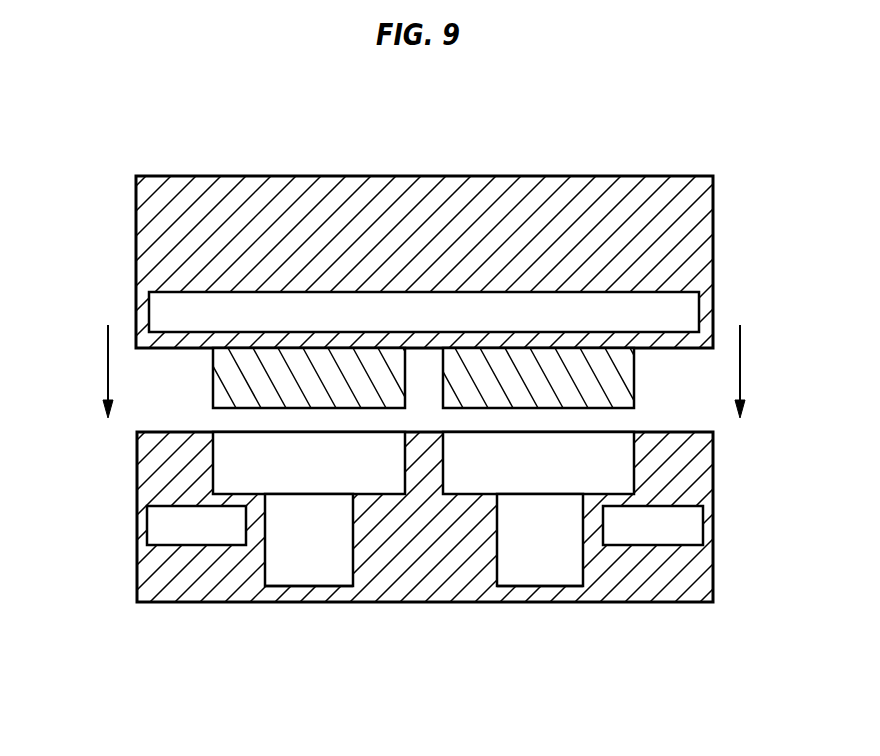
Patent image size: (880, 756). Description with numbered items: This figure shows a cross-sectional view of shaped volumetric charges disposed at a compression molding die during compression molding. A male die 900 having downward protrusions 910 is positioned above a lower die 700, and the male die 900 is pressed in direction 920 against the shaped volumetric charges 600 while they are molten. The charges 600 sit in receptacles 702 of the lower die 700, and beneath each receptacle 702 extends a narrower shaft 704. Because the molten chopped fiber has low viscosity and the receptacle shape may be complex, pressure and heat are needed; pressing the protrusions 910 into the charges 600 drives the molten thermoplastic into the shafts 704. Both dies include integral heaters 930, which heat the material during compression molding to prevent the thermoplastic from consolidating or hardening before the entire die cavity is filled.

The male die 900 is at (713, 203).
The compression molding die 700 is at (713, 557).
The protrusions 910 is at (213, 374).
The shaped volumetric charges 600 is at (237, 445).
The receptacle 702 is at (303, 495).
The shafts 704 is at (302, 573).
The integral heaters 930 is at (425, 418).
The direction 920 is at (108, 360).